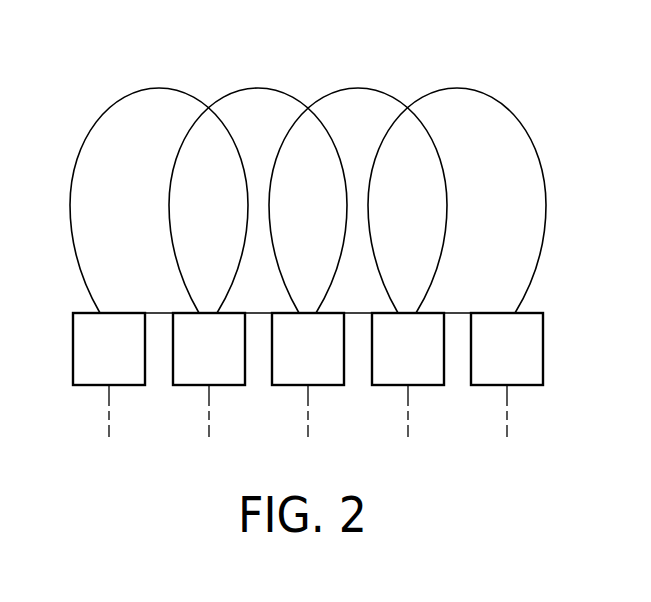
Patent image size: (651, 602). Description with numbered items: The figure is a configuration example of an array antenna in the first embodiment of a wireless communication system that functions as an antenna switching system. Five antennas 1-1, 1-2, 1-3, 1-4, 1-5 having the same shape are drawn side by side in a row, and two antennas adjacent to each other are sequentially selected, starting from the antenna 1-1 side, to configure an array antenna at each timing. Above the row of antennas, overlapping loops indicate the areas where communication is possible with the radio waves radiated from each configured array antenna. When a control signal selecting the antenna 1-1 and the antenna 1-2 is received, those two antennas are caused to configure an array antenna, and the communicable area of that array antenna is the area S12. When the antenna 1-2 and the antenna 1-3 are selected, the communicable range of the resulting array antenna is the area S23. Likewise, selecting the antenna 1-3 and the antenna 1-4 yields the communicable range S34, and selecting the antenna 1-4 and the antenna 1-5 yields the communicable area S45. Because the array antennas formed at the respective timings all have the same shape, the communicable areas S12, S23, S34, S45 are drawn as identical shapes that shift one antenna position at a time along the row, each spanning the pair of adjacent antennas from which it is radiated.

The communicable area S12 is at (160, 97).
The communicable area S23 is at (257, 97).
The communicable area S34 is at (357, 97).
The communicable area S45 is at (456, 97).
The antenna 1-1 is at (109, 375).
The antenna 1-2 is at (209, 375).
The antenna 1-3 is at (308, 375).
The antenna 1-4 is at (408, 375).
The antenna 1-5 is at (507, 375).